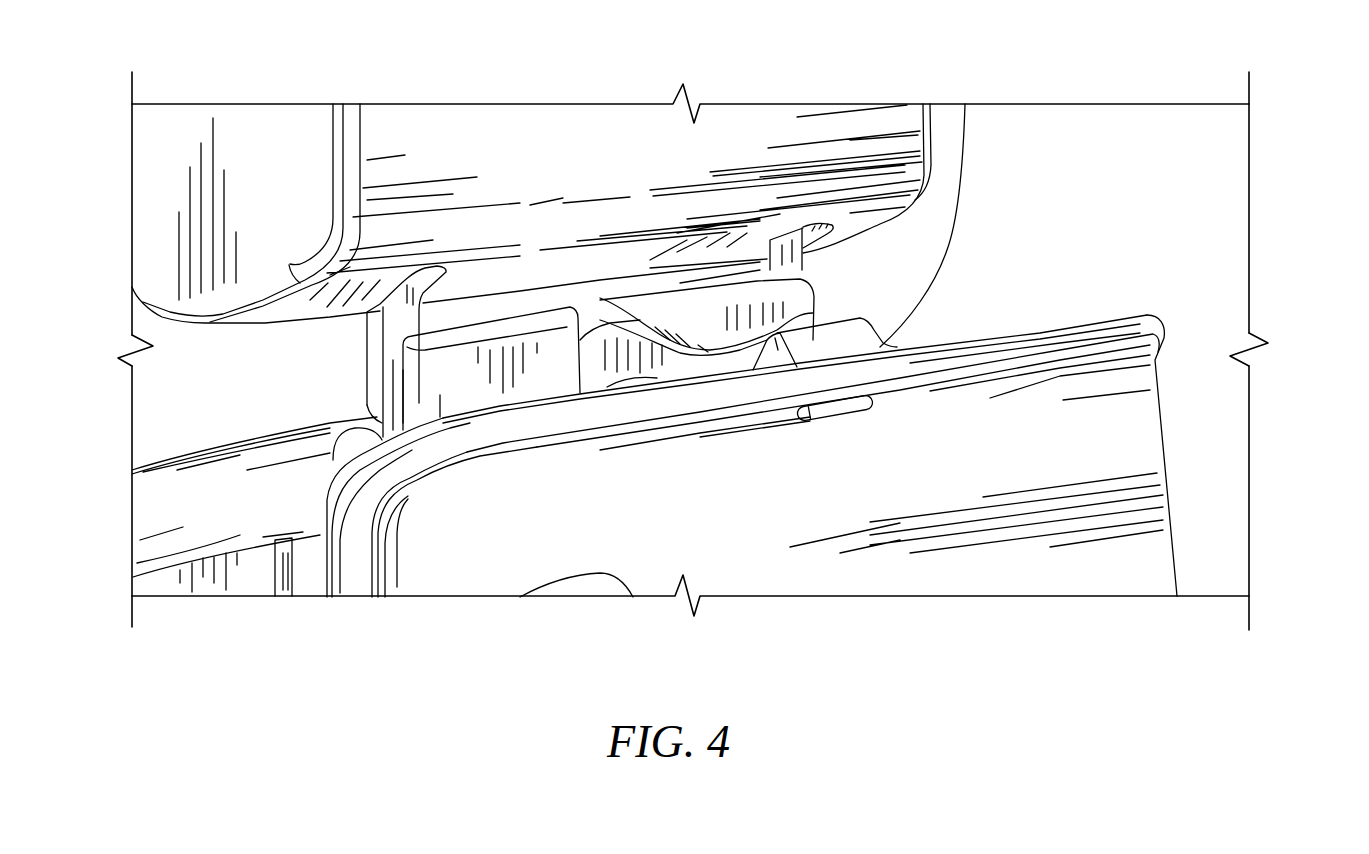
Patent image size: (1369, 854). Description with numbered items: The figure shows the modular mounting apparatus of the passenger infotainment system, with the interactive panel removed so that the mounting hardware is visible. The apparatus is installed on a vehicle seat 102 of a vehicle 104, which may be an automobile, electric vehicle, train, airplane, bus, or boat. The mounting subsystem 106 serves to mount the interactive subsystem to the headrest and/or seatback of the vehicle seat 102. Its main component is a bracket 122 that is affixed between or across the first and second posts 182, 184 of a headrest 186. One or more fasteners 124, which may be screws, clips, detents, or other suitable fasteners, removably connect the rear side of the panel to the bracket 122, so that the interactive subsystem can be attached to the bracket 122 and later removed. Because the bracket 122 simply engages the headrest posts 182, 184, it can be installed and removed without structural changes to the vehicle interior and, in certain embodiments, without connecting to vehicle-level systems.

The vehicle seat 102 is at (267, 527).
The vehicle 104 is at (1086, 280).
The mounting subsystem 106 is at (965, 104).
The bracket 122 is at (497, 348).
The fasteners 124 is at (837, 343).
The first post 182 is at (392, 403).
The second post 184 is at (783, 252).
The headrest 186 is at (380, 151).